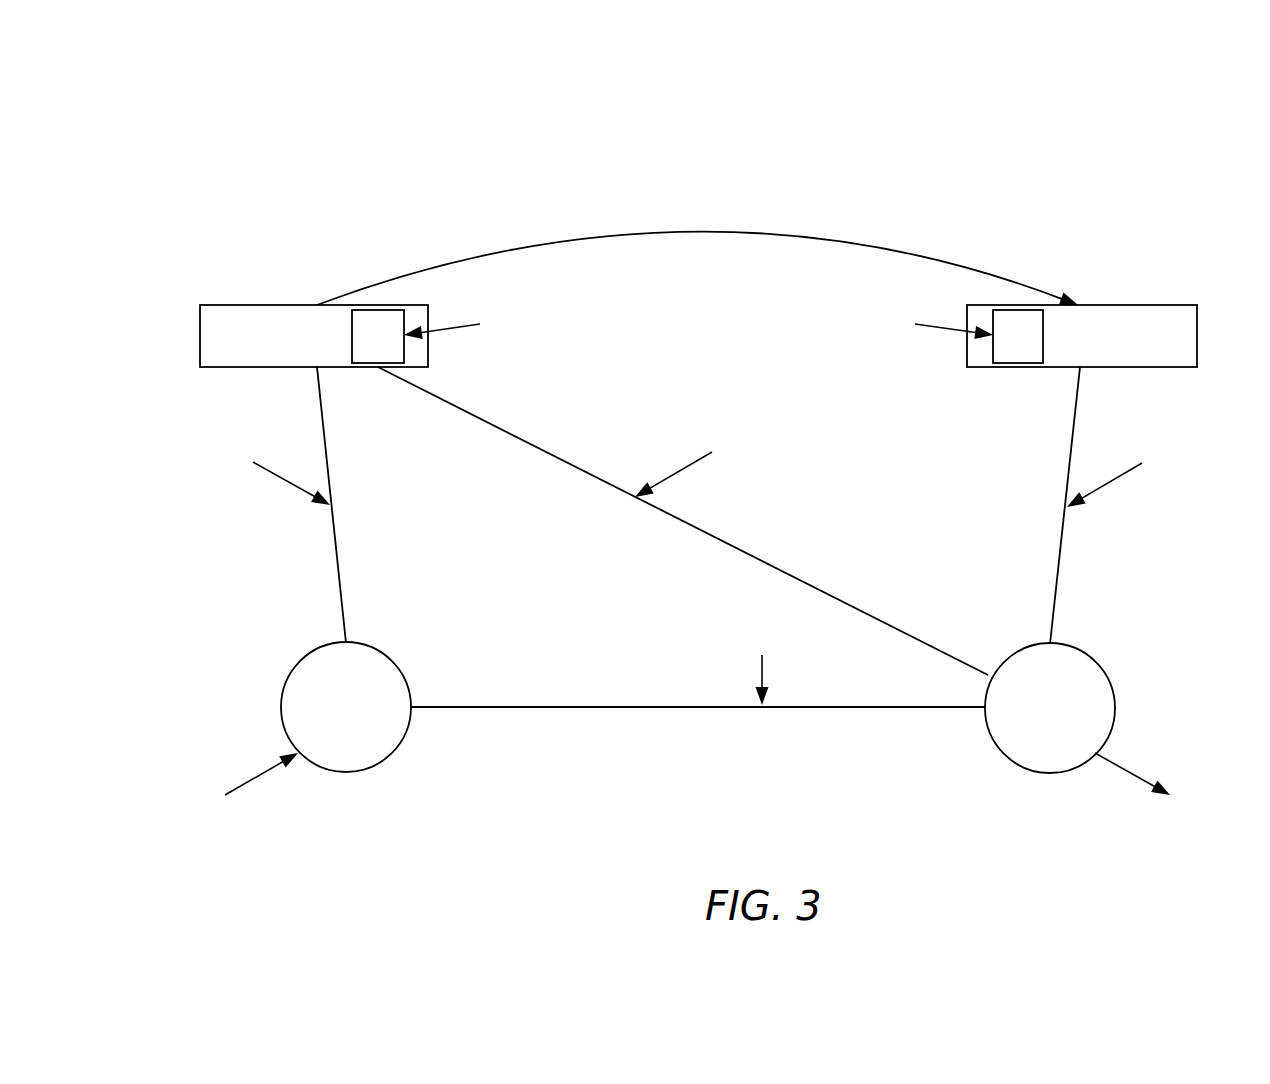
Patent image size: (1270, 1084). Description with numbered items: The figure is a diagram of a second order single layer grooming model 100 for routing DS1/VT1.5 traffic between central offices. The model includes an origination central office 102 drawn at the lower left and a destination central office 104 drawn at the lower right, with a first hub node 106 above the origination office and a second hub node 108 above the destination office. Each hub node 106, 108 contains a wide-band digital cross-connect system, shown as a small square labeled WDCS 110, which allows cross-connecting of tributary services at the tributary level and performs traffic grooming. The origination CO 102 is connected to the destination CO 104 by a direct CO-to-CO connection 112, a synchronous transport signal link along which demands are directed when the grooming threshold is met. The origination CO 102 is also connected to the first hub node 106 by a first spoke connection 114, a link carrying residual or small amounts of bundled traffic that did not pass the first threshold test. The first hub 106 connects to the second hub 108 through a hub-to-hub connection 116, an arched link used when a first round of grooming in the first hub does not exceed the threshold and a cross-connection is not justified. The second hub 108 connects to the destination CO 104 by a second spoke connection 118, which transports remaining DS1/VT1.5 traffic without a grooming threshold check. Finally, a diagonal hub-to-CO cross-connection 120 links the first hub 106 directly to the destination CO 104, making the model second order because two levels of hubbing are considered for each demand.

The second order single layer grooming model 100 is at (1094, 116).
The origination central office 102 is at (377, 745).
The destination central office 104 is at (1018, 745).
The first hub node 106 is at (248, 323).
The second hub node 108 is at (1143, 323).
The wideband digital cross-connect system (WDCS) 110 is at (405, 349).
The direct CO-to-CO connection 112 is at (557, 707).
The first spoke connection 114 is at (339, 590).
The hub-to-hub connection 116 is at (637, 234).
The second spoke connection 118 is at (1055, 593).
The hub-to-CO cross-connection 120 is at (735, 547).